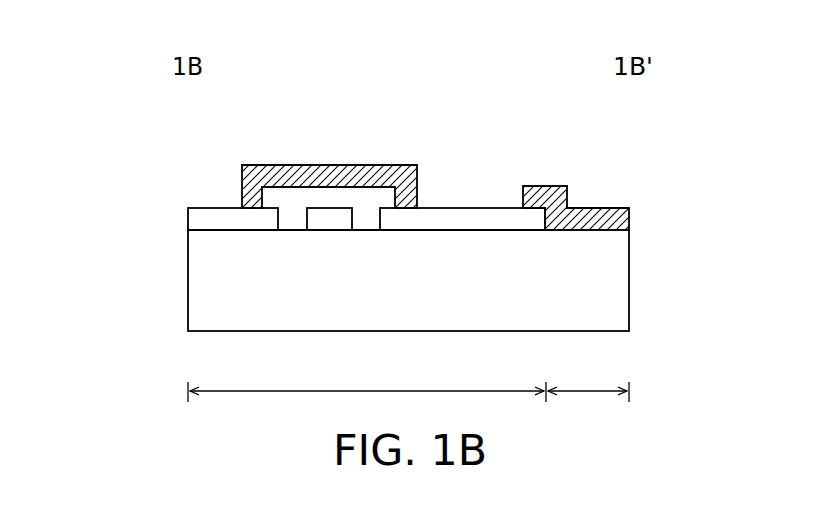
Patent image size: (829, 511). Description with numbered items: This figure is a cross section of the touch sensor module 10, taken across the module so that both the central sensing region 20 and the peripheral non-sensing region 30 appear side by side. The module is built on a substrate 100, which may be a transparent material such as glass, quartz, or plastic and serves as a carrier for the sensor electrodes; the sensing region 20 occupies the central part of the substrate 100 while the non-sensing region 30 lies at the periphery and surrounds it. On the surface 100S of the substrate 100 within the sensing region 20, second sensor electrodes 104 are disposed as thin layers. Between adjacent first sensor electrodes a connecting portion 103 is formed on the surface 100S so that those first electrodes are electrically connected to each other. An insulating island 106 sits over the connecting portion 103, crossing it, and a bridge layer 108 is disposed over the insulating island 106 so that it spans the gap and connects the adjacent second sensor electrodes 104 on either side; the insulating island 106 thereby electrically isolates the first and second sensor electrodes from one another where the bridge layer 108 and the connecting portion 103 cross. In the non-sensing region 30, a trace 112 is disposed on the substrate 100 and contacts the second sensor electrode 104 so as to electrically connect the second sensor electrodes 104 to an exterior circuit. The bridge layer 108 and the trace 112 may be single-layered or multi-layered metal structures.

The touch sensor module 10 is at (112, 110).
The substrate 100 is at (430, 295).
The surface of the substrate 100S is at (510, 236).
The connecting portion 103 is at (328, 218).
The second sensor electrode 104 is at (195, 218).
The insulating island 106 is at (280, 197).
The bridge layer 108 is at (388, 167).
The trace 112 is at (623, 219).
The sensing region 20 is at (383, 380).
The non-sensing region 30 is at (603, 381).